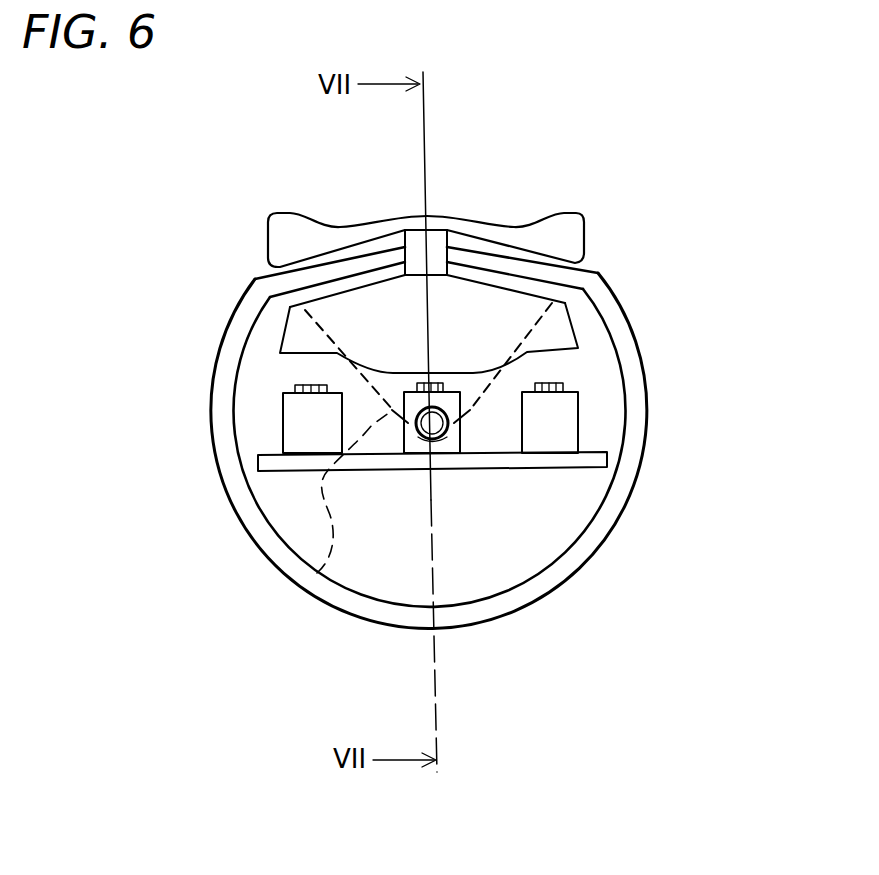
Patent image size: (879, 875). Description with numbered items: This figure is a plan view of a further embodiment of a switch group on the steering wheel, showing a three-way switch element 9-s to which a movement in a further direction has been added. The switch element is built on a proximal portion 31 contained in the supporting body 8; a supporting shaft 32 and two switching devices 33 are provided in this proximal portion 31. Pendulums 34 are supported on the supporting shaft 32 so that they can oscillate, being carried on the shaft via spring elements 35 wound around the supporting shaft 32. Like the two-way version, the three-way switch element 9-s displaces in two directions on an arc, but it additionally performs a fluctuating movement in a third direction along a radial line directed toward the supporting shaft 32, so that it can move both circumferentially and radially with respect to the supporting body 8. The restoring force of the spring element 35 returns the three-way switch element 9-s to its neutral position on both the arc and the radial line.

The supporting body 8 is at (556, 577).
The three-way switch element 9-s is at (436, 222).
The proximal portion 31 is at (510, 463).
The supporting shaft 32 is at (434, 443).
The switching device 33 is at (298, 388).
The pendulum 34 is at (312, 325).
The spring element 35 is at (317, 573).